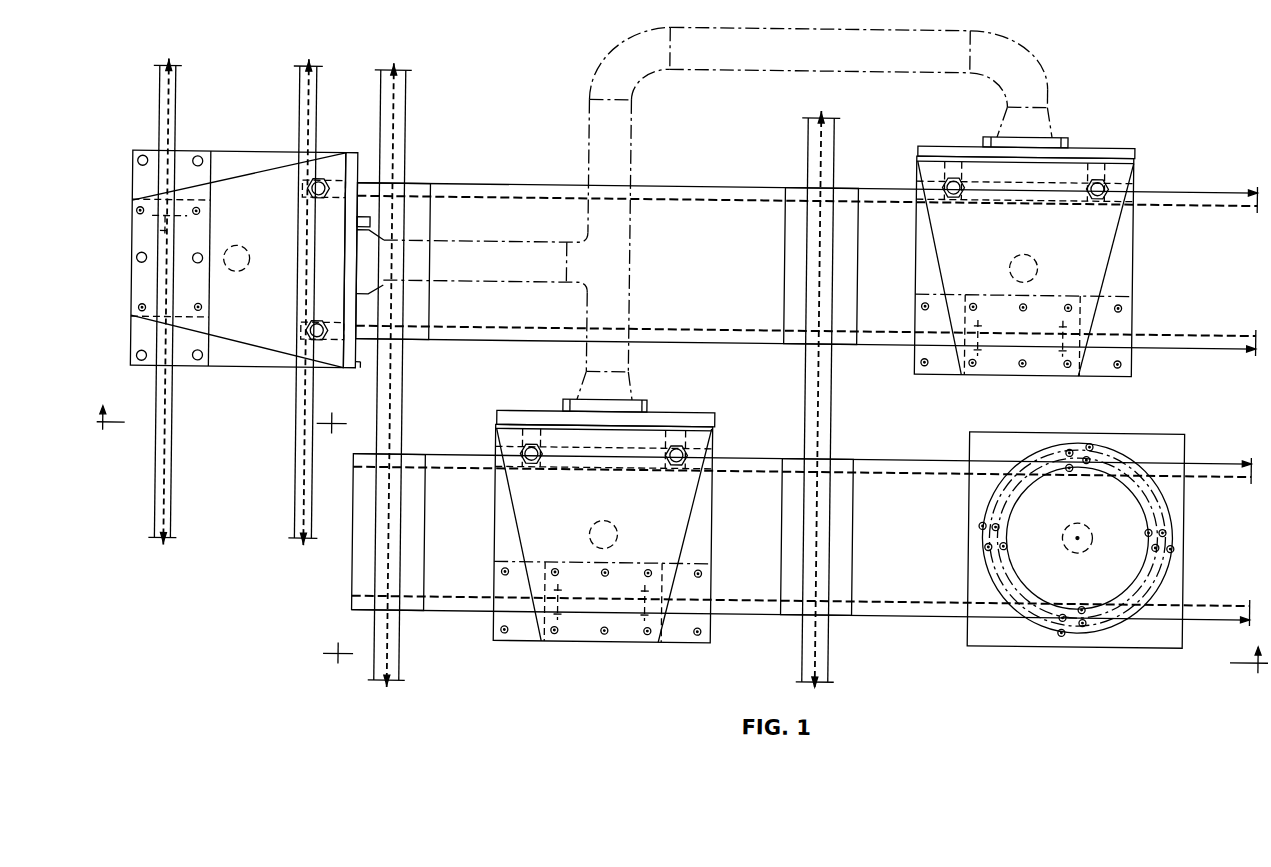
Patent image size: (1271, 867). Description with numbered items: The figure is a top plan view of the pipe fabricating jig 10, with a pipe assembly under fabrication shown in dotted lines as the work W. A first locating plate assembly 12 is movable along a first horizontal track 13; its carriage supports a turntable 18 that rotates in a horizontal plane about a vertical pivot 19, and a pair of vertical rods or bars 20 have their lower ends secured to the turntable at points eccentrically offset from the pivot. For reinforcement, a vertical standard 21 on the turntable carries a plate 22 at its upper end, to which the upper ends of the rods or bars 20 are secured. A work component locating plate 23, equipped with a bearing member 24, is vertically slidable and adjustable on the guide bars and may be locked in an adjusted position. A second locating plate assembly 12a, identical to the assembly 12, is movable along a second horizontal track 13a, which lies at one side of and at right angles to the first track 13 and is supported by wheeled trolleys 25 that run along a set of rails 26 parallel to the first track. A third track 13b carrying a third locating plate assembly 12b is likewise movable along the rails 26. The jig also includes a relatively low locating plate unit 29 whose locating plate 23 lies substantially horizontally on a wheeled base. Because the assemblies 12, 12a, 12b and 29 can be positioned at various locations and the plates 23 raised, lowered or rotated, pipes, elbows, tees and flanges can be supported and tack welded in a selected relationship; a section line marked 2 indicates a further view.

The pipe fabricating jig 10 is at (804, 371).
The first locating plate assembly 12 is at (229, 251).
The second locating plate assembly 12a is at (717, 527).
The third locating plate assembly 12b is at (1135, 236).
The first horizontal track 13 is at (173, 102).
The second horizontal track 13a is at (466, 474).
The third track 13b is at (692, 199).
The turntable 18 is at (226, 157).
The vertical pivot 19 is at (246, 256).
The rods or bars 20 is at (305, 192).
The vertical standard 21 is at (150, 223).
The plate 22 is at (246, 350).
The work component locating plate 23 is at (1097, 127).
The bearing member 24 is at (338, 168).
The wheeled trolleys 25 is at (429, 304).
The rails 26 is at (375, 402).
The locating plate unit 29 is at (982, 541).
The work W is at (585, 165).
The section line 2 is at (674, 535).